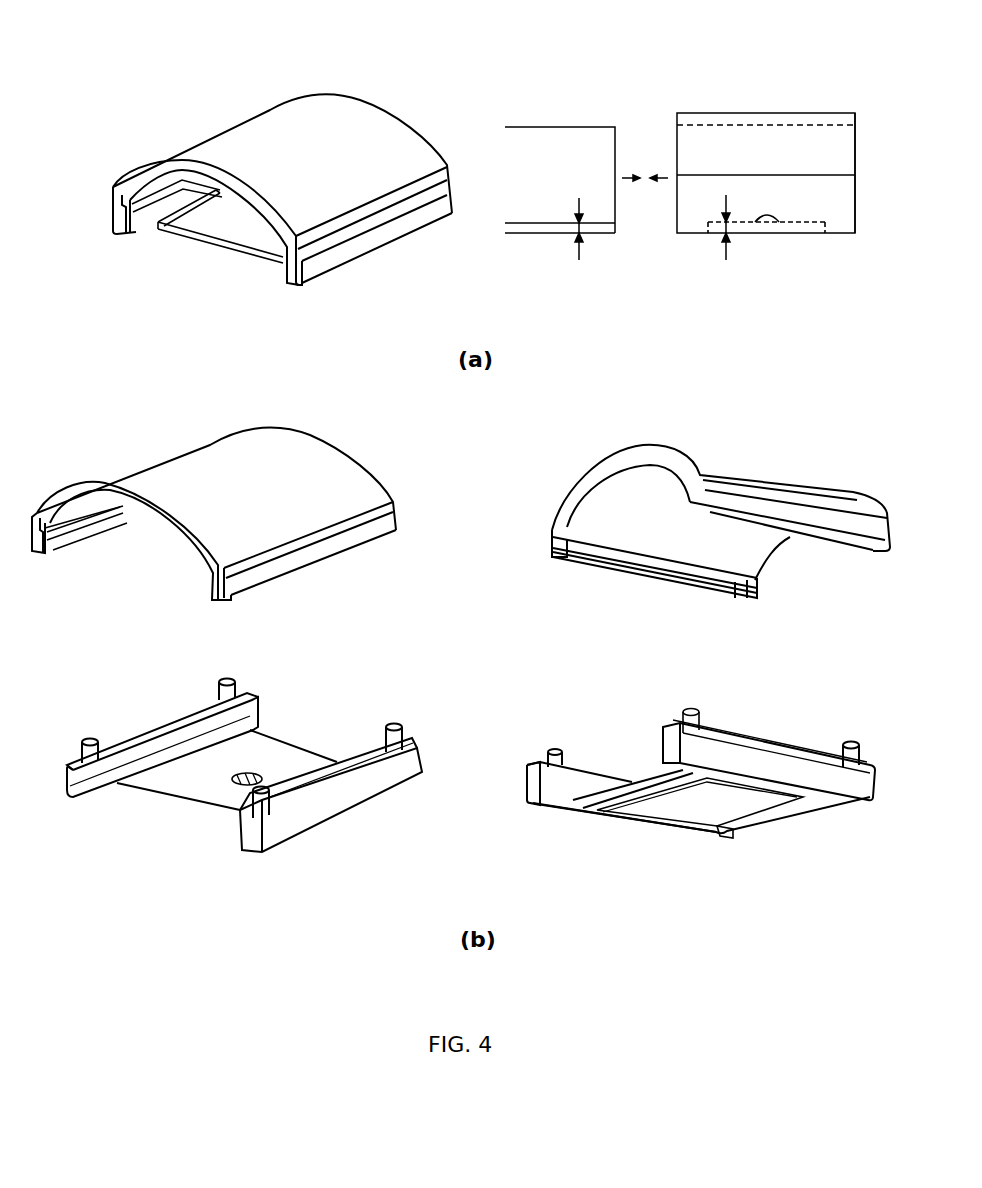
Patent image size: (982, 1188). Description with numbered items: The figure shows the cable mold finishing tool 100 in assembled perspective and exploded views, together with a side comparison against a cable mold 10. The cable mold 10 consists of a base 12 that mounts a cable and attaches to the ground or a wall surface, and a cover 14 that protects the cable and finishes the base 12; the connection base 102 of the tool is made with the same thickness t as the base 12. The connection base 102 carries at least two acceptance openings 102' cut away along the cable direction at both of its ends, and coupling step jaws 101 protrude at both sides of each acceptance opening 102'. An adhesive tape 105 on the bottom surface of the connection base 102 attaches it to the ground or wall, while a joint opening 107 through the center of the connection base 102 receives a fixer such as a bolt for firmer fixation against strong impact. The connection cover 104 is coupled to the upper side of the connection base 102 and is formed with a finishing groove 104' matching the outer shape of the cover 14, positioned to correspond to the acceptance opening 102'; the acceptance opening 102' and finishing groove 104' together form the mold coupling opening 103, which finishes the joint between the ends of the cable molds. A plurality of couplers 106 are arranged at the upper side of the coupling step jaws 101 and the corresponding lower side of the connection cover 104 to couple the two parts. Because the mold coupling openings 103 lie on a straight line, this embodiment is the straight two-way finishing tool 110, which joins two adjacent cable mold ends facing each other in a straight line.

The cable mold finishing tool 100 is at (84, 49).
The connection cover 104 is at (461, 341).
The finishing groove 104' is at (439, 414).
The connection base 102 is at (493, 526).
The acceptance opening 102' is at (471, 536).
The mold coupling opening 103 is at (100, 284).
The cable mold 10 is at (540, 307).
The base 12 is at (562, 230).
The cover 14 is at (543, 193).
The thickness t is at (707, 232).
The coupling step jaw 101 is at (827, 193).
The adhesive tape 105 is at (668, 813).
The coupler 106 is at (690, 708).
The joint opening 107 is at (249, 773).
The straight two-way finishing tool 110 is at (477, 572).